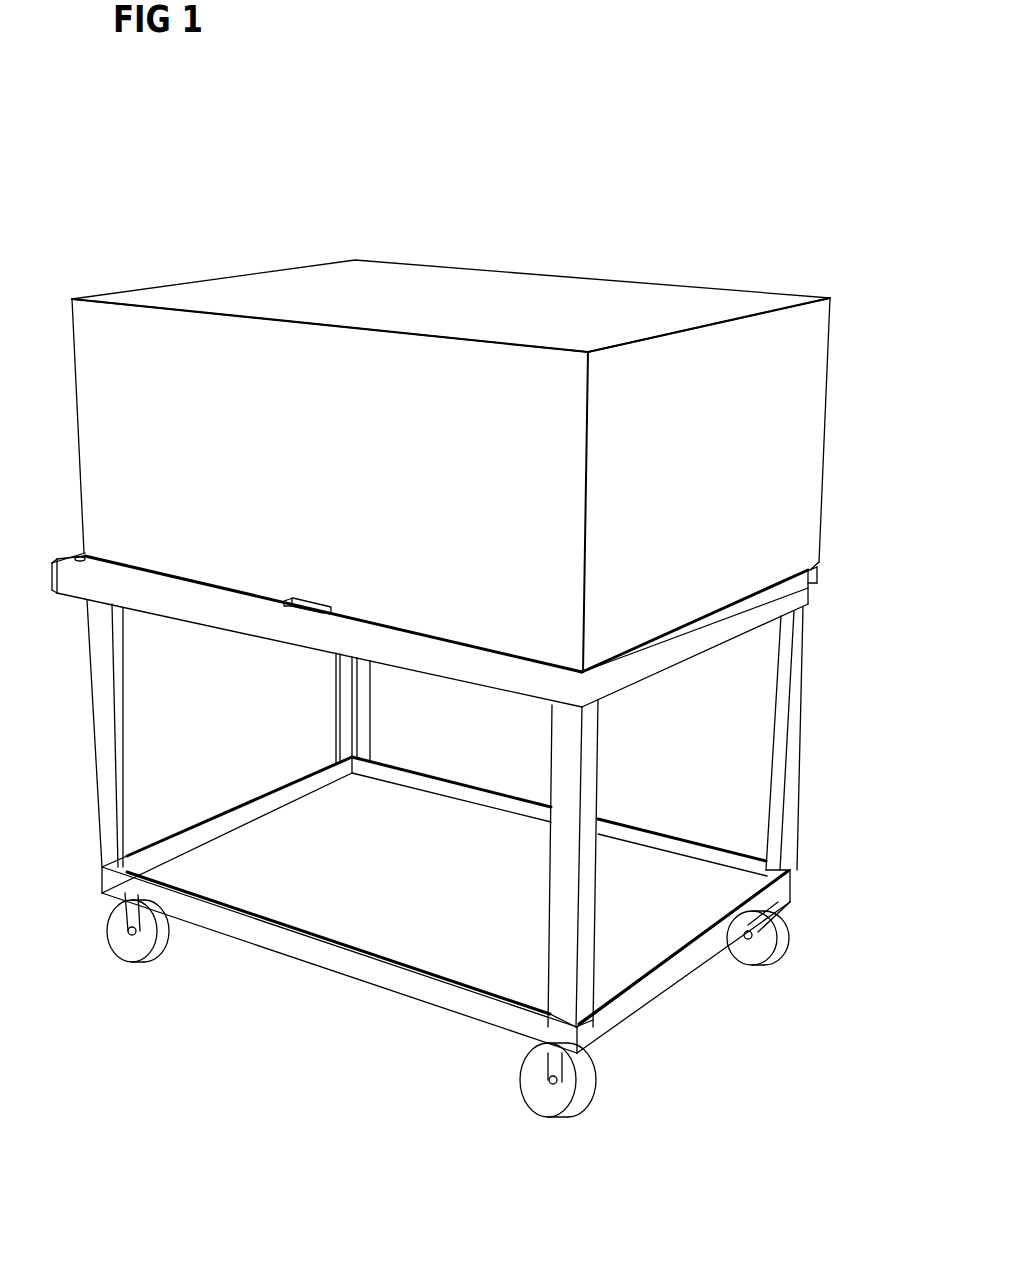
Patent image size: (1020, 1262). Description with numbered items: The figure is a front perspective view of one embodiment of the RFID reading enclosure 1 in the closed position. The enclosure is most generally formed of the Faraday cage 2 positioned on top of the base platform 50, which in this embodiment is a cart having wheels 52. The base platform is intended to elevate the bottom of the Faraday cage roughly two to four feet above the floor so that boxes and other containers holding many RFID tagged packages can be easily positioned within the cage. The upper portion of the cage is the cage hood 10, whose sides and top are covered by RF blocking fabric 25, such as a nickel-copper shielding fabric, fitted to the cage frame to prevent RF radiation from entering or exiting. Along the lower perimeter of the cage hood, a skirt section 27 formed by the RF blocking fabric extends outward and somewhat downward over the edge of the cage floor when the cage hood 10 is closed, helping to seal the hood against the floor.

The RFID reading enclosure 1 is at (852, 427).
The Faraday cage 2 is at (852, 479).
The cage hood 10 is at (638, 302).
The RF blocking fabric 25 is at (433, 275).
The skirt section 27 is at (147, 580).
The base platform 50 is at (852, 657).
The wheels 52 is at (150, 943).